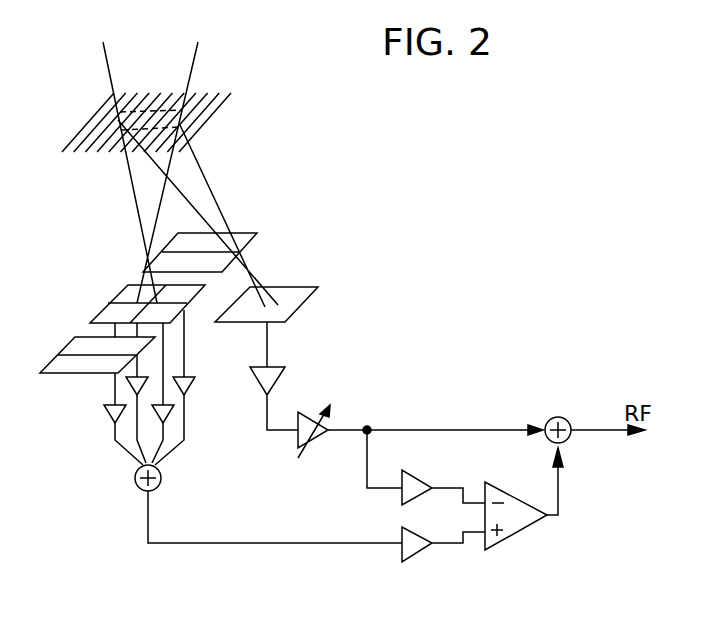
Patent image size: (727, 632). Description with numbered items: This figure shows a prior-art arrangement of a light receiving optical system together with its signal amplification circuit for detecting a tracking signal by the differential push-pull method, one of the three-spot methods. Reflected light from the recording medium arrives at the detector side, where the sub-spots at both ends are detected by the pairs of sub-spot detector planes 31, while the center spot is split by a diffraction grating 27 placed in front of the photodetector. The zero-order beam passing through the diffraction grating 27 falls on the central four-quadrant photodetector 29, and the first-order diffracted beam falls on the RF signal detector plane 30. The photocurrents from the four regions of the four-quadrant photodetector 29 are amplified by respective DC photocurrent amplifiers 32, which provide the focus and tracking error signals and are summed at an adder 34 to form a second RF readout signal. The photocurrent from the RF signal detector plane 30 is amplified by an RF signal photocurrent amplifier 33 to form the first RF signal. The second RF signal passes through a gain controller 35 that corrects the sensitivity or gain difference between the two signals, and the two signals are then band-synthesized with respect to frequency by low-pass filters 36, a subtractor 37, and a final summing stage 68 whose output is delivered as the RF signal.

The diffraction grating 27 is at (212, 113).
The four-quadrant photodetector 29 is at (120, 296).
The RF signal detector plane 30 is at (303, 301).
The sub-spot detector planes 31 is at (247, 231).
The DC photocurrent amplifiers 32 is at (103, 414).
The RF signal photocurrent amplifier 33 is at (280, 378).
The adder 34 is at (134, 481).
The gain controller 35 is at (321, 442).
The low-pass filters 36 is at (422, 478).
The subtractor 37 is at (518, 533).
The adder 68 is at (560, 416).